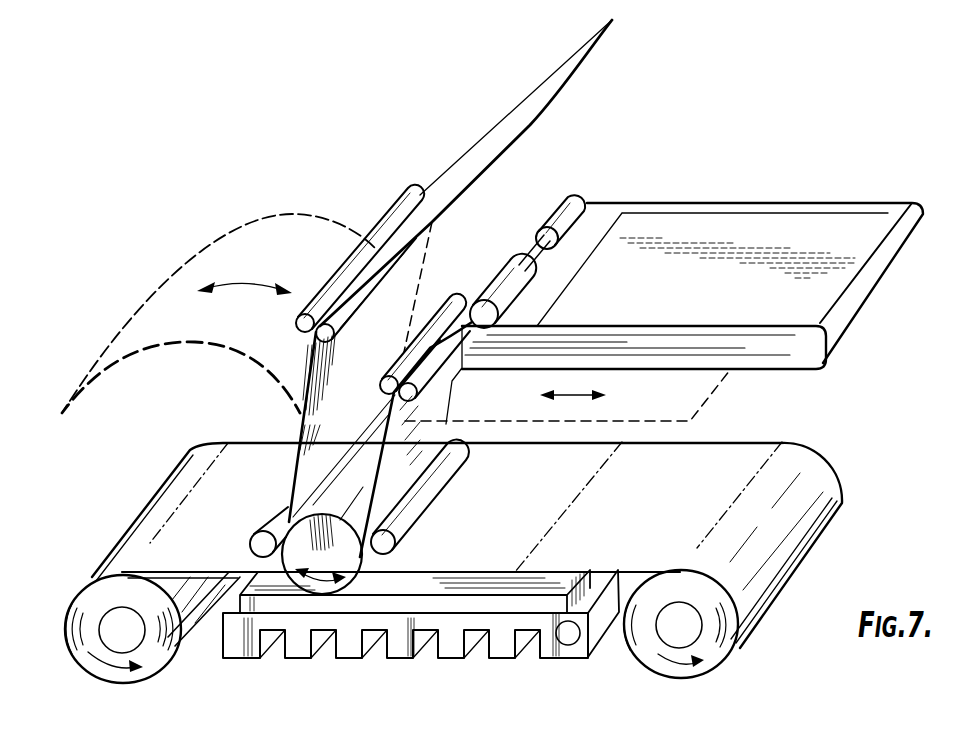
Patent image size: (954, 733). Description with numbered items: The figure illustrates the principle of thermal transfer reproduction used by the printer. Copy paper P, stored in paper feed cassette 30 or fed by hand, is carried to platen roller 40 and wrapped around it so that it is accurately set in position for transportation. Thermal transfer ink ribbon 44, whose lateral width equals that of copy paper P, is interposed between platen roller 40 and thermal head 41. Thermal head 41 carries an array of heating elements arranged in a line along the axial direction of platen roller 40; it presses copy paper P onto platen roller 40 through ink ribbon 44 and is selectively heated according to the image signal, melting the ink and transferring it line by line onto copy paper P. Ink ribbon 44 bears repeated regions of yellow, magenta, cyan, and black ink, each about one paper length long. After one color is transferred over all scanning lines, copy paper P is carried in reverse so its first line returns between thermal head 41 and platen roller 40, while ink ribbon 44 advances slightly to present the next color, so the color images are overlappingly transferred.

The copy paper P is at (489, 143).
The paper feed cassette 30 is at (867, 280).
The platen roller 40 is at (322, 590).
The thermal head 41 is at (239, 645).
The thermal transfer ink ribbon 44 is at (828, 501).